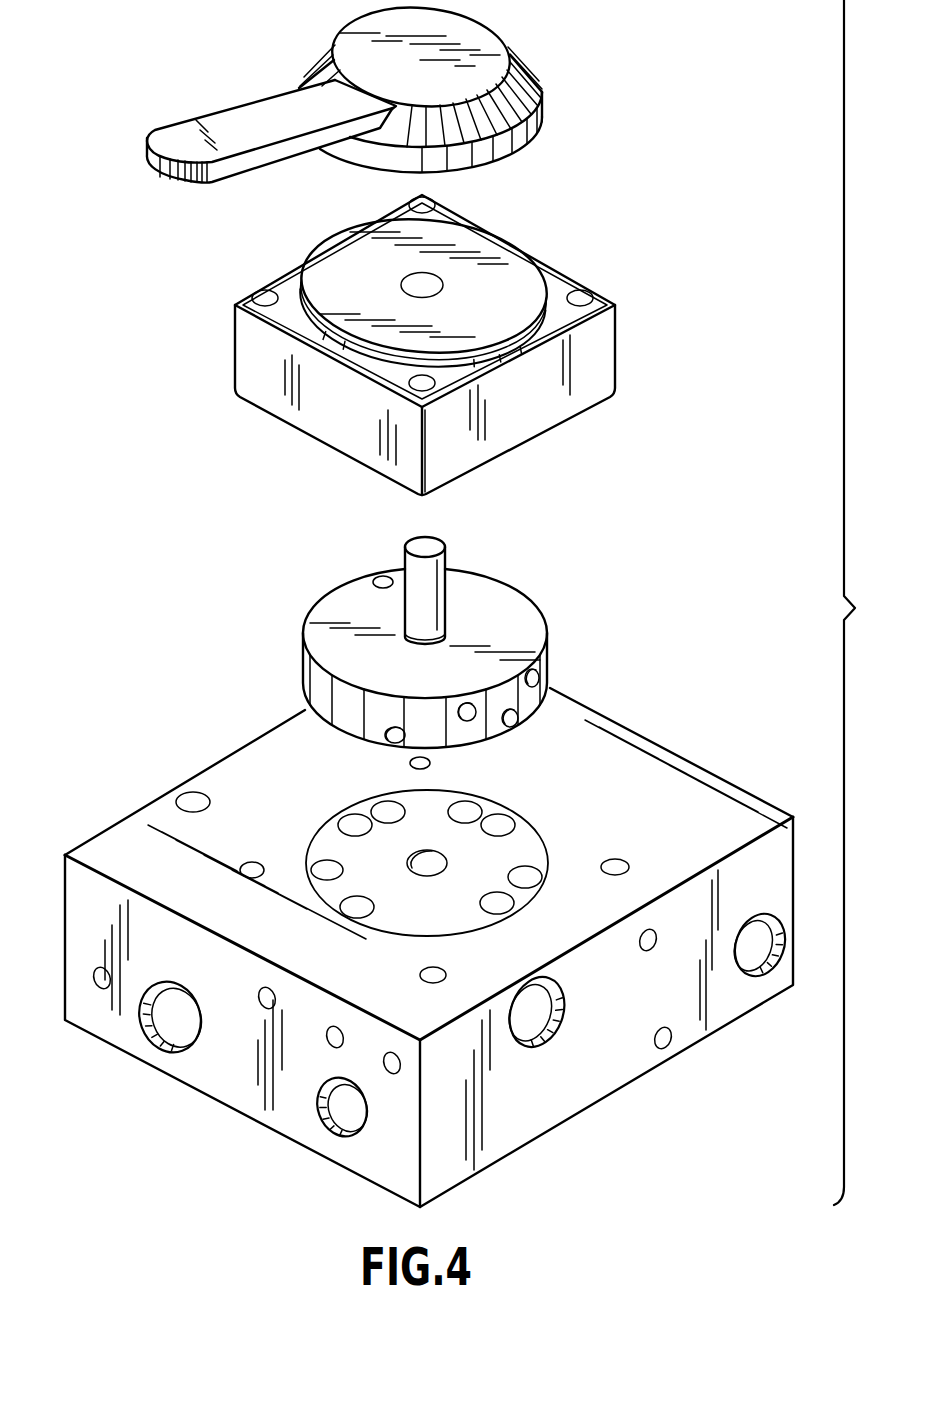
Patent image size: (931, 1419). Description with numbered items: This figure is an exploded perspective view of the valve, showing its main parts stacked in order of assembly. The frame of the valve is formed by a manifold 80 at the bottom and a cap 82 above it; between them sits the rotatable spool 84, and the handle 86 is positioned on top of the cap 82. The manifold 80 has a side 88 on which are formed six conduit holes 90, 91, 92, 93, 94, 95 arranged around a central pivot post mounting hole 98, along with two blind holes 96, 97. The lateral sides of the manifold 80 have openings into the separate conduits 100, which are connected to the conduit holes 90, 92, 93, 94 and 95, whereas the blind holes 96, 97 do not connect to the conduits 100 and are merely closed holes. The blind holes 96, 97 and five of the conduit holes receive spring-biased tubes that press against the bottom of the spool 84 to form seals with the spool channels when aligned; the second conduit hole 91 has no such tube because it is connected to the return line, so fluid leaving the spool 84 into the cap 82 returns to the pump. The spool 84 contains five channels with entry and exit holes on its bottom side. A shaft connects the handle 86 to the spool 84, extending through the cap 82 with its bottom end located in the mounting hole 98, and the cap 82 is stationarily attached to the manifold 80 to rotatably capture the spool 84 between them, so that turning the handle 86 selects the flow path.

The manifold 80 is at (730, 797).
The cap 82 is at (615, 338).
The spool 84 is at (502, 610).
The handle 86 is at (530, 78).
The side 88 is at (600, 730).
The conduit hole 90 is at (500, 910).
The second conduit hole 91 is at (348, 821).
The conduit hole 92 is at (356, 911).
The conduit hole 93 is at (502, 818).
The conduit hole 94 is at (379, 803).
The conduit hole 95 is at (466, 803).
The blind hole 96 is at (322, 875).
The blind hole 97 is at (533, 880).
The pivot post mounting hole 98 is at (418, 873).
The conduits 100 is at (160, 1043).